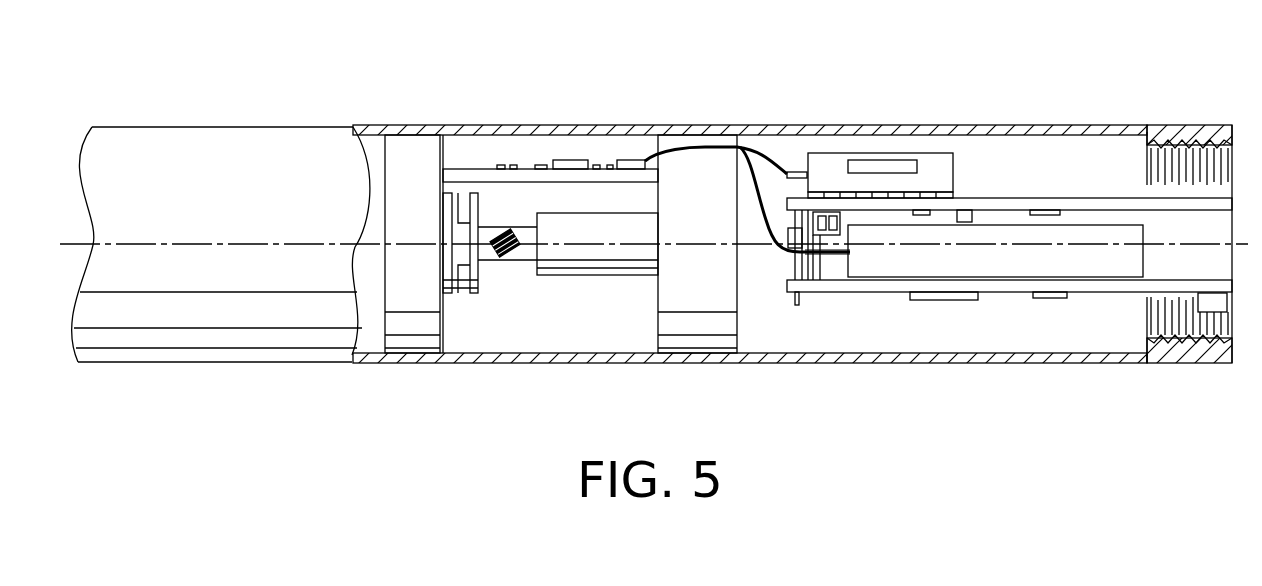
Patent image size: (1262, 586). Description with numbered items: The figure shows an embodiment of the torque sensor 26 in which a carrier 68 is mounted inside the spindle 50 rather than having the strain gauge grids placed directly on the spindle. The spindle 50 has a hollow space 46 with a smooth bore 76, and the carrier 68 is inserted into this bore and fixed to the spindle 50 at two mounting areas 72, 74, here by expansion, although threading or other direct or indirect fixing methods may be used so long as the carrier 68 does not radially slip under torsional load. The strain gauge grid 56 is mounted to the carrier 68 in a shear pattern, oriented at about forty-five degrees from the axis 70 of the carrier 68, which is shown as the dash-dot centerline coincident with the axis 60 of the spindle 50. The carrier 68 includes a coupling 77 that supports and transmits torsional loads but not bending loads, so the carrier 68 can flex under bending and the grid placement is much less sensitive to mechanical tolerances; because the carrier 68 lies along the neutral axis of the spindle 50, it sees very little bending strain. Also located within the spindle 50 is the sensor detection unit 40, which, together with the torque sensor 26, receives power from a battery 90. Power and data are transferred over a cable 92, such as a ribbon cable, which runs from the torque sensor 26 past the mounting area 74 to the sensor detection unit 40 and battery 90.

The torque sensor 26 is at (603, 84).
The spindle 50 is at (305, 140).
The carrier 68 is at (409, 170).
The coupling 77 is at (474, 195).
The cable 92 is at (750, 147).
The sensor detection unit 40 is at (1019, 172).
The axis of the spindle 60 is at (654, 221).
The axis of the carrier 70 is at (213, 243).
The strain gauge grid 56 is at (505, 256).
The battery 90 is at (878, 258).
The hollow space 46 is at (747, 363).
The smooth bore 76 is at (375, 343).
The mounting area 72 is at (422, 245).
The mounting area 74 is at (740, 377).